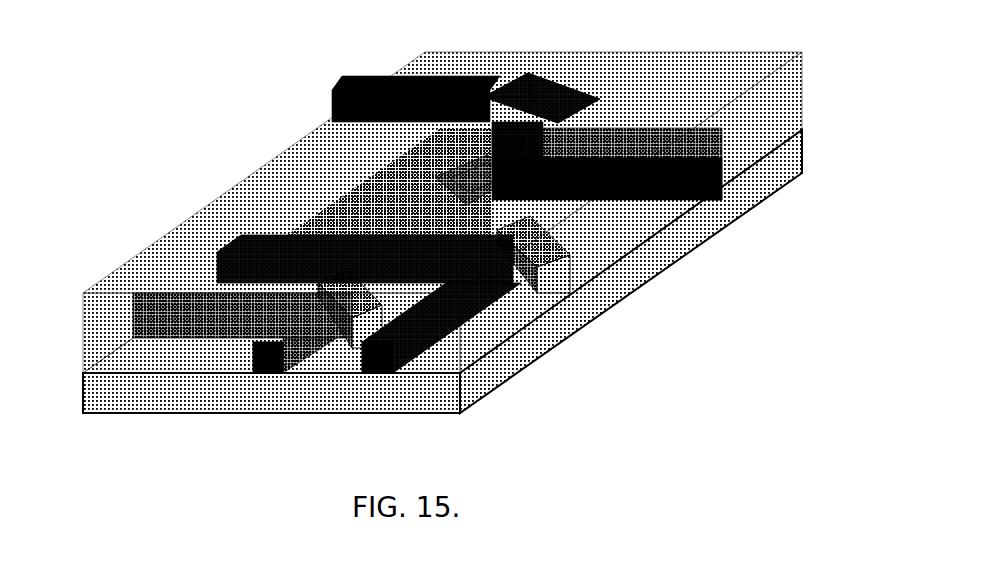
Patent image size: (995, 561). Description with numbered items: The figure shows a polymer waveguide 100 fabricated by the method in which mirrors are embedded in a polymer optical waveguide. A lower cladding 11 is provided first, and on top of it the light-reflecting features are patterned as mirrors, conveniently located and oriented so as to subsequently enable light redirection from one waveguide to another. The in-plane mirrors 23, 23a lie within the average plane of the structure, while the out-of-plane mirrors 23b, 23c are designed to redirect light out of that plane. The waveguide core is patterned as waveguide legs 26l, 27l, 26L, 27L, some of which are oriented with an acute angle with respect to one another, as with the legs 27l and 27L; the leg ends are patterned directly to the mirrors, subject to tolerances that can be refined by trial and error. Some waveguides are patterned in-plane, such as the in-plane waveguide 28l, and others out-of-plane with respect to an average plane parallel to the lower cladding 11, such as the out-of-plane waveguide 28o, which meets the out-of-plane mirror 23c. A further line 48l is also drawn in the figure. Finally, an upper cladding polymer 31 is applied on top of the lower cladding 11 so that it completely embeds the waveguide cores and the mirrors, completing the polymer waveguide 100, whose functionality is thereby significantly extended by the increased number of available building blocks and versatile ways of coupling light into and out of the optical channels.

The polymer waveguide 100 is at (522, 437).
The lower cladding 11 is at (555, 307).
The upper cladding polymer 31 is at (742, 105).
The waveguide leg 26l is at (135, 322).
The waveguide leg 27l is at (222, 260).
The waveguide leg 26L is at (255, 360).
The waveguide leg 27L is at (360, 360).
The in-plane mirror 23 is at (330, 290).
The in-plane mirror 23a is at (503, 227).
The out-of-plane mirror 23b is at (466, 172).
The out-of-plane mirror 23c is at (548, 95).
The in-plane waveguide 28l is at (648, 168).
The out-of-plane waveguide 28o is at (527, 143).
The line 48 48l is at (405, 105).